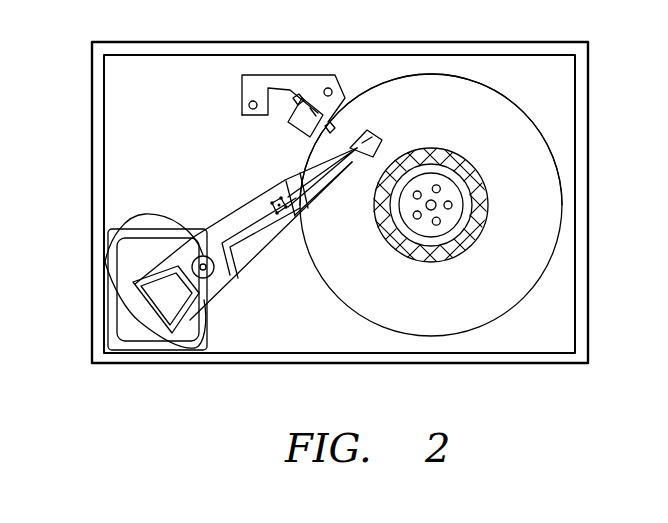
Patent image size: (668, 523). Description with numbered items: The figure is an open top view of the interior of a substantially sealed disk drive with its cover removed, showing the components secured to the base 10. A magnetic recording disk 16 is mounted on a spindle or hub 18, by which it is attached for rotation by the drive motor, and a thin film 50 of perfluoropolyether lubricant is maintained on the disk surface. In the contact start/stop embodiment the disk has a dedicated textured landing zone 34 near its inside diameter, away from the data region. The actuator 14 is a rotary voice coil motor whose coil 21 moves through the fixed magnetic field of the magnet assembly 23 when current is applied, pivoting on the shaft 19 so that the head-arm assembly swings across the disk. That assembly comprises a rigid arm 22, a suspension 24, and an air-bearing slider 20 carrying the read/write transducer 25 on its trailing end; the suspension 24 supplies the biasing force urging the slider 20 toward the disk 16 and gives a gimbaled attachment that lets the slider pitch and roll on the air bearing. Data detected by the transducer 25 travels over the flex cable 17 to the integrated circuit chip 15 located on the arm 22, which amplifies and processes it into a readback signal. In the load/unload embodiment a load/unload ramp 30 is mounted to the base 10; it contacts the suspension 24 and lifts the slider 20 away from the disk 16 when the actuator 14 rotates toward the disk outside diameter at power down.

The base 10 is at (585, 124).
The actuator 14 is at (130, 348).
The integrated circuit chip 15 is at (270, 203).
The magnetic recording disk 16 is at (547, 267).
The flex cable 17 is at (298, 186).
The spindle or hub 18 is at (453, 190).
The shaft / cable 19 is at (108, 229).
The air-bearing slider 20 is at (297, 183).
The coil 21 is at (137, 281).
The rigid arm 22 is at (253, 253).
The magnet assembly 23 is at (145, 313).
The suspension 24 is at (295, 213).
The read/write head or transducer 25 is at (367, 152).
The load/unload ramp 30 is at (317, 110).
The textured landing zone 34 is at (483, 213).
The thin film of lubricant 50 is at (470, 94).